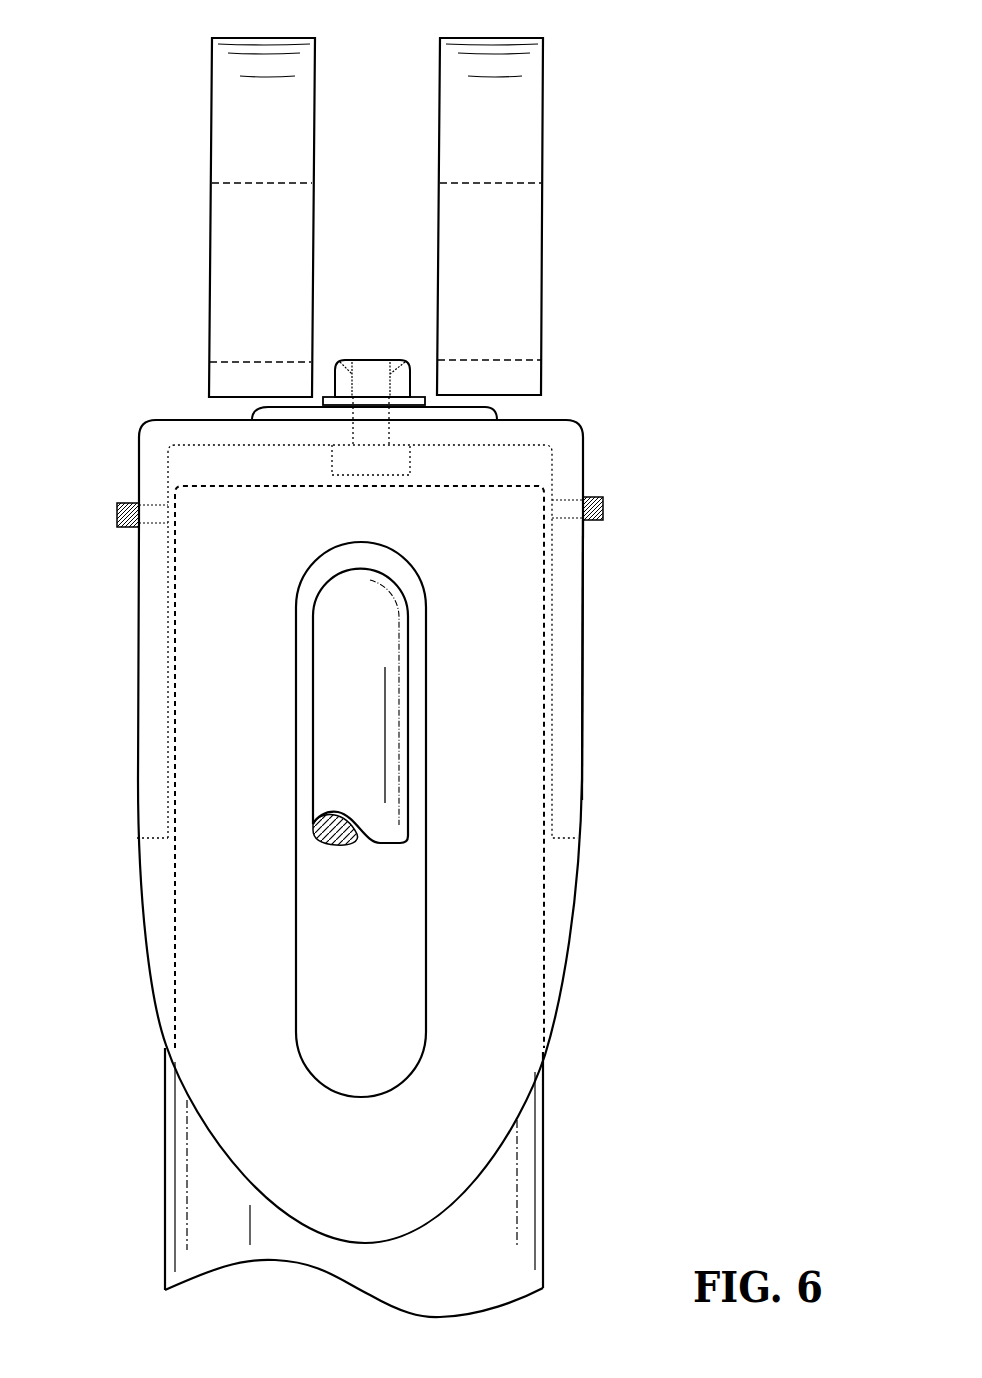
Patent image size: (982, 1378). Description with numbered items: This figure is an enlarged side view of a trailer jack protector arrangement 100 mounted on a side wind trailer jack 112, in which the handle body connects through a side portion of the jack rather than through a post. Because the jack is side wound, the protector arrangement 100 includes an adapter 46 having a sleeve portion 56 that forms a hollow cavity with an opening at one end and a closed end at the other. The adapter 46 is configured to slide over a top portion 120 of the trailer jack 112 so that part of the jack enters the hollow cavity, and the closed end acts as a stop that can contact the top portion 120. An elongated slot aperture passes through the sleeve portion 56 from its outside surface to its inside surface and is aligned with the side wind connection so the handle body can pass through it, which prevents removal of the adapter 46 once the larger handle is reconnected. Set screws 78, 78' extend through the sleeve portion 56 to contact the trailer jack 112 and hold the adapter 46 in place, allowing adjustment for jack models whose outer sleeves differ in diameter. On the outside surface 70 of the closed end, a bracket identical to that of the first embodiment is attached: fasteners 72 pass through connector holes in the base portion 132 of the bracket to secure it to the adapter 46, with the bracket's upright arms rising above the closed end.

The trailer jack protector arrangement 100 is at (411, 677).
The adapter 46 is at (125, 606).
The sleeve portion 56 is at (583, 641).
The outside surface of the closed end 70 is at (173, 420).
The fastener 72 is at (380, 360).
The set screw 78 is at (113, 480).
The set screw 78' is at (611, 479).
The trailer jack 112 is at (550, 1152).
The top portion 120 is at (197, 484).
The base portion 132 is at (487, 409).